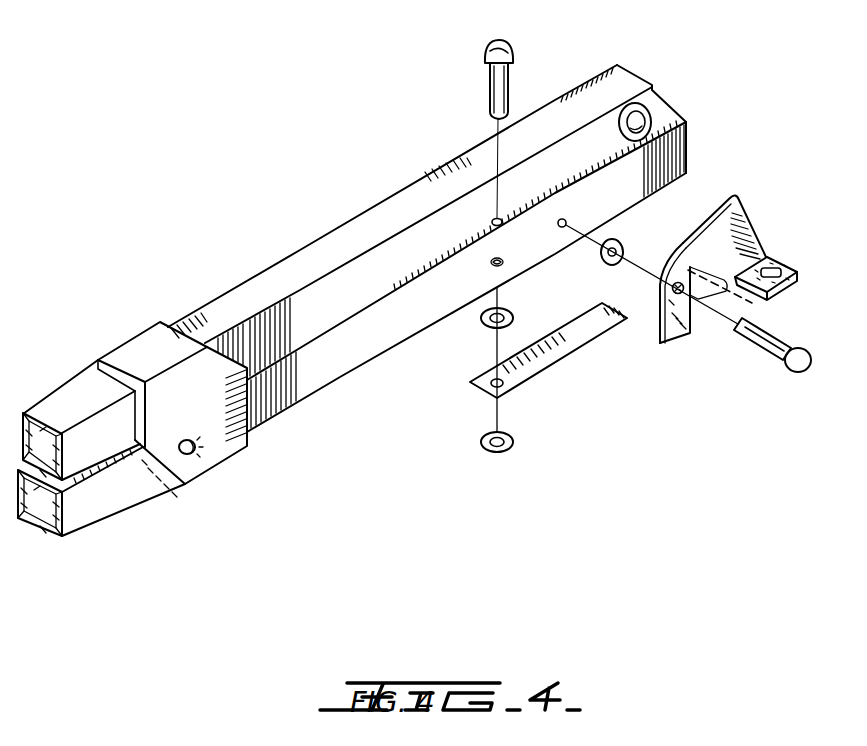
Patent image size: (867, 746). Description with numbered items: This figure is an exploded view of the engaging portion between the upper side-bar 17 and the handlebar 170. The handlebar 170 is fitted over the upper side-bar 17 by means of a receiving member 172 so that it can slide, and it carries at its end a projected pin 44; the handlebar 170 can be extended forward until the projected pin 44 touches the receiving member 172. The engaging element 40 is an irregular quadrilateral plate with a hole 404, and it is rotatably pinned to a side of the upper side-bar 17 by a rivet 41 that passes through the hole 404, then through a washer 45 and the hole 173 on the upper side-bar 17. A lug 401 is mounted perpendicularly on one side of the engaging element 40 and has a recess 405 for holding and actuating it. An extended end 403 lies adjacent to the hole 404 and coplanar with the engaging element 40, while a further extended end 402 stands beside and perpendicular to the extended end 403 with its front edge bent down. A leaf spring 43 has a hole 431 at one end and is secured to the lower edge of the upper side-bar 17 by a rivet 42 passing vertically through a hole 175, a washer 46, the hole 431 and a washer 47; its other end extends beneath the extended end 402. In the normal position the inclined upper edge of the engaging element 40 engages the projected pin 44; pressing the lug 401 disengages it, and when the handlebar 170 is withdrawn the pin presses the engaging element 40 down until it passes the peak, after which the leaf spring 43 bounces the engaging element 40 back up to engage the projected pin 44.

The upper side-bar 17 is at (310, 389).
The handlebar 170 is at (283, 272).
The receiving member 172 is at (137, 342).
The hole 173 is at (561, 229).
The hole 175 is at (457, 174).
The engaging element 40 is at (746, 292).
The lug 401 is at (798, 287).
The further extended end 402 is at (739, 302).
The extended end 403 is at (667, 344).
The hole 404 is at (683, 253).
The recess 405 is at (778, 264).
The rivet 41 is at (767, 350).
The rivet 42 is at (512, 46).
The leaf spring 43 is at (565, 350).
The hole 431 is at (482, 392).
The projected pin 44 is at (651, 113).
The washer 45 is at (620, 245).
The washer 46 is at (480, 328).
The washer 47 is at (490, 451).